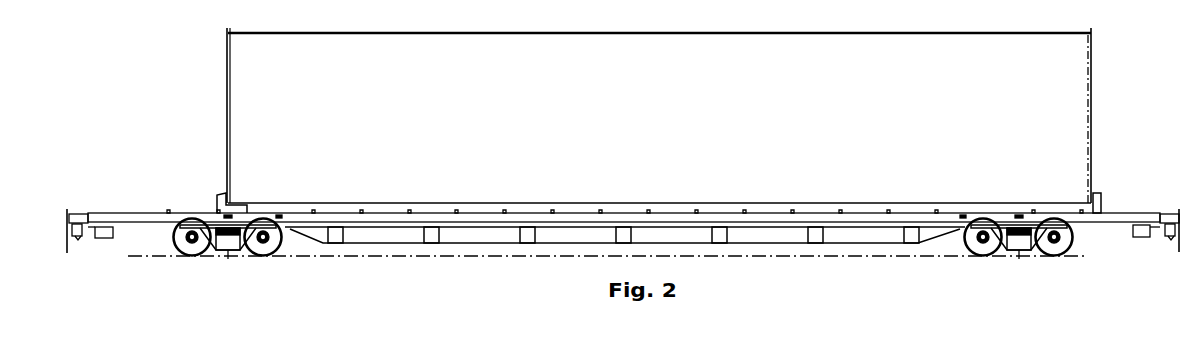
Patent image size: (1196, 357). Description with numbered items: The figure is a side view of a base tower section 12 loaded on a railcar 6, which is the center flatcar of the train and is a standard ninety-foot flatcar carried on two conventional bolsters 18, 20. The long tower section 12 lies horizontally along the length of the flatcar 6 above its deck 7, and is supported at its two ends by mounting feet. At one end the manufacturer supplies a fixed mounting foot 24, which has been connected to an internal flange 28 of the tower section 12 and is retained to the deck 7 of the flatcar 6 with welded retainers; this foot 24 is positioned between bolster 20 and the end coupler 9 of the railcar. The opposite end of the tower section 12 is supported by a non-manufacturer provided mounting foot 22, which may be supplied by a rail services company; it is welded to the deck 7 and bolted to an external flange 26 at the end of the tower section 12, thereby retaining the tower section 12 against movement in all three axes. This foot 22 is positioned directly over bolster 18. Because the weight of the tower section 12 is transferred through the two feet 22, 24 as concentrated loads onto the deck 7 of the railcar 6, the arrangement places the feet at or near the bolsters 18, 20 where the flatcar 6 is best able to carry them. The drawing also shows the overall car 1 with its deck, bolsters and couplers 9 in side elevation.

The railcar 1 is at (792, 256).
The railcar 6 is at (543, 244).
The deck 7 is at (1135, 212).
The end coupler 9 is at (1176, 238).
The tower section 12 is at (613, 35).
The bolster 18 is at (231, 253).
The bolster 20 is at (1020, 250).
The mounting foot 22 is at (216, 199).
The fixed mounting foot 24 is at (1101, 200).
The external flange 26 is at (230, 118).
The internal flange 28 is at (1088, 140).